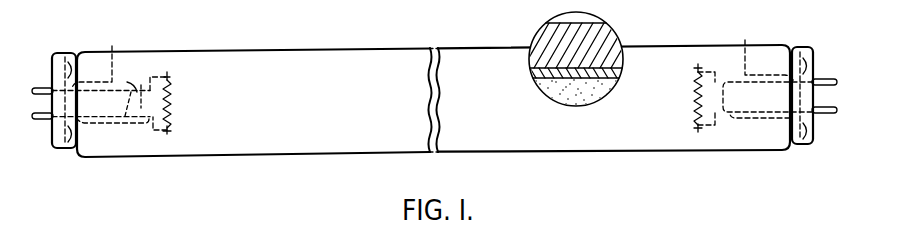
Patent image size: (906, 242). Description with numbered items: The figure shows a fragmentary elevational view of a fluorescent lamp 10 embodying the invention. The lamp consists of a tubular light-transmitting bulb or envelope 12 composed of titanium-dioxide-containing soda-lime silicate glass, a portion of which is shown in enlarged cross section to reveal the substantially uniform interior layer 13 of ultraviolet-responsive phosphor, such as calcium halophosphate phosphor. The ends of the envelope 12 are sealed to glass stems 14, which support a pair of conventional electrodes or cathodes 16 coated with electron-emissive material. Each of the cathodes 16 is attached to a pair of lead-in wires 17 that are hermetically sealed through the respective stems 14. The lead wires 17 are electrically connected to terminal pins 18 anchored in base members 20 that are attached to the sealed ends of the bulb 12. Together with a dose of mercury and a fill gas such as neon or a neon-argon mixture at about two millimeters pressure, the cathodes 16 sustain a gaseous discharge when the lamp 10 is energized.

The fluorescent lamp 10 is at (231, 42).
The envelope 12 is at (363, 57).
The phosphor layer 13 is at (547, 78).
The glass stem 14 is at (433, 55).
The cathode 16 is at (185, 108).
The lead-in wire 17 is at (124, 86).
The terminal pin 18 is at (33, 92).
The base member 20 is at (59, 53).